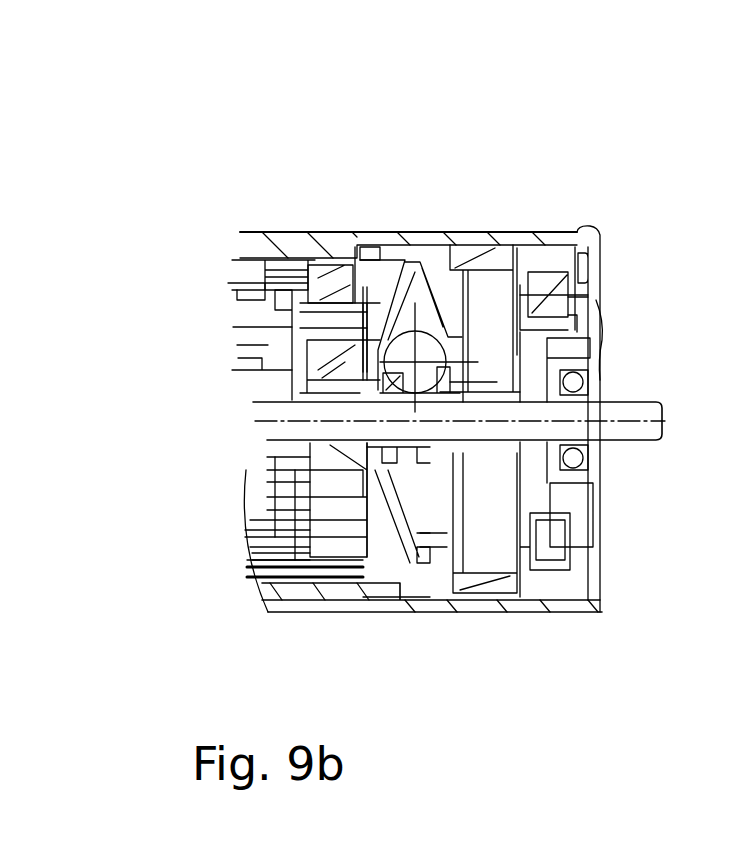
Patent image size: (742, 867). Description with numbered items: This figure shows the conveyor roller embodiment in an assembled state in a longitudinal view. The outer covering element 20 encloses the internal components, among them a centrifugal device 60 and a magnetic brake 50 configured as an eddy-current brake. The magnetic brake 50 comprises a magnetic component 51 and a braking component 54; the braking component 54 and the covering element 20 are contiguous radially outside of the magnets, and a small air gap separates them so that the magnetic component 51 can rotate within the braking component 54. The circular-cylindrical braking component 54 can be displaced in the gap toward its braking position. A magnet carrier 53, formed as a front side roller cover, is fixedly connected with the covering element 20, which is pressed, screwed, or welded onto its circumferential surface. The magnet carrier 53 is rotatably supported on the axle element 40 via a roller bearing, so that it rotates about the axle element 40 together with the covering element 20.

The covering element 20 is at (297, 233).
The axle element 40 is at (627, 410).
The magnetic brake 50 is at (578, 128).
The magnetic component 51 is at (578, 205).
The magnet carrier 53 is at (600, 282).
The braking component 54 is at (513, 203).
The centrifugal device 60 is at (443, 130).